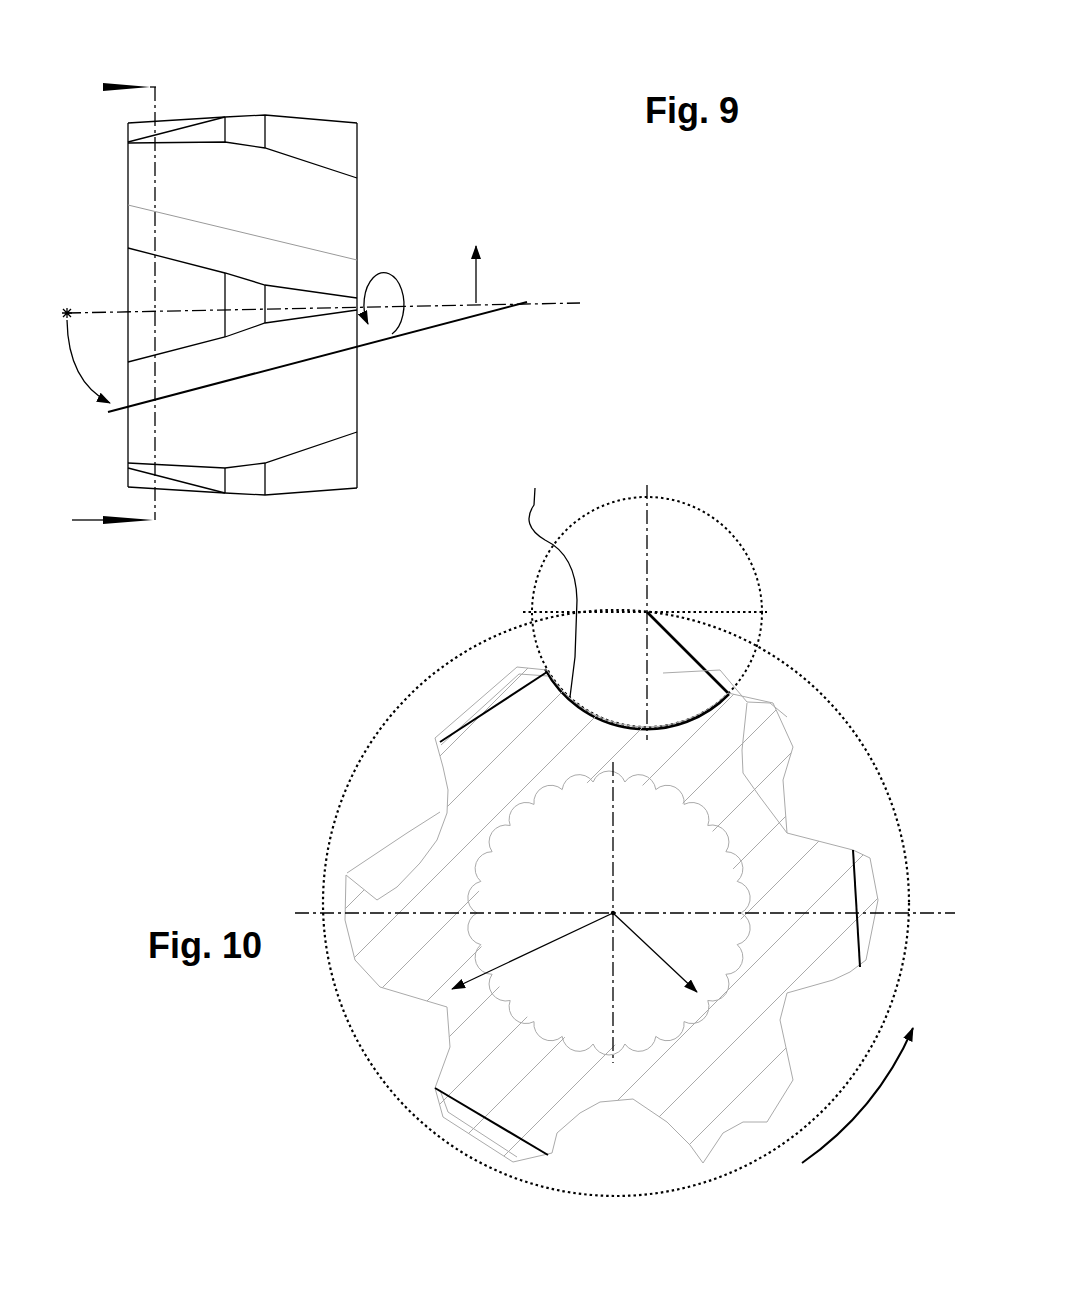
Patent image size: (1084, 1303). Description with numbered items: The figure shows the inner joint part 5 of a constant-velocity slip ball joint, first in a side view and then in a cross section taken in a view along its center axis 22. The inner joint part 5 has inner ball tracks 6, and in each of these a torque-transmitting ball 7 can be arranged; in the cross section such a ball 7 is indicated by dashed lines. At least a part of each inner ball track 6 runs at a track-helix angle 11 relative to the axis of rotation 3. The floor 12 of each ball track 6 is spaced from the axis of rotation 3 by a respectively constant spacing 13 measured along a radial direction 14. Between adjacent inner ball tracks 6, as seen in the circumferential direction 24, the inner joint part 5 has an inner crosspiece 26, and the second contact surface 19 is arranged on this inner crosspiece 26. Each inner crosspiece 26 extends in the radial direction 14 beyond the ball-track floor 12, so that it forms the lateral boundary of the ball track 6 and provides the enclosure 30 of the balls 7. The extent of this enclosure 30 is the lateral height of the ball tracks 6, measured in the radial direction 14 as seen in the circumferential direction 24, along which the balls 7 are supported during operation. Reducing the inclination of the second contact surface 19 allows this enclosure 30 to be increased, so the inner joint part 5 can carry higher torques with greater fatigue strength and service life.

In FIG. 9, the axis of rotation 3 is at (73, 293).
In FIG. 10, the axis of rotation 3 is at (616, 912).
In FIG. 9, the inner joint part 5 is at (446, 149).
In FIG. 10, the inner joint part 5 is at (808, 592).
In FIG. 9, the inner ball track 6 is at (328, 190).
In FIG. 10, the inner ball track 6 is at (412, 852).
In FIG. 10, the torque-transmitting ball 7 is at (681, 523).
In FIG. 9, the track-helix angle 11 is at (286, 357).
In FIG. 10, the ball-track floor 12 is at (773, 800).
In FIG. 10, the spacing 13 is at (532, 951).
In FIG. 9, the radial direction 14 is at (502, 269).
In FIG. 10, the radial direction 14 is at (665, 952).
In FIG. 9, the second contact surface 19 is at (147, 287).
In FIG. 10, the second contact surface 19 is at (507, 680).
In FIG. 9, the center axis 22 is at (353, 298).
In FIG. 10, the center axis 22 is at (611, 912).
In FIG. 9, the circumferential direction 24 is at (408, 301).
In FIG. 10, the circumferential direction 24 is at (864, 1095).
In FIG. 9, the inner crosspiece 26 is at (273, 300).
In FIG. 10, the inner crosspiece 26 is at (480, 700).
In FIG. 10, the enclosure 30 is at (542, 579).